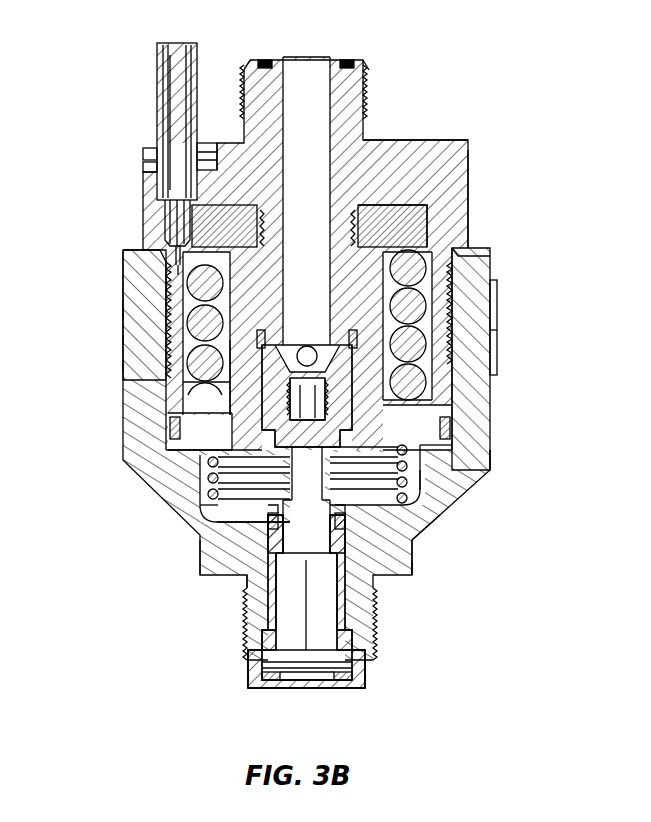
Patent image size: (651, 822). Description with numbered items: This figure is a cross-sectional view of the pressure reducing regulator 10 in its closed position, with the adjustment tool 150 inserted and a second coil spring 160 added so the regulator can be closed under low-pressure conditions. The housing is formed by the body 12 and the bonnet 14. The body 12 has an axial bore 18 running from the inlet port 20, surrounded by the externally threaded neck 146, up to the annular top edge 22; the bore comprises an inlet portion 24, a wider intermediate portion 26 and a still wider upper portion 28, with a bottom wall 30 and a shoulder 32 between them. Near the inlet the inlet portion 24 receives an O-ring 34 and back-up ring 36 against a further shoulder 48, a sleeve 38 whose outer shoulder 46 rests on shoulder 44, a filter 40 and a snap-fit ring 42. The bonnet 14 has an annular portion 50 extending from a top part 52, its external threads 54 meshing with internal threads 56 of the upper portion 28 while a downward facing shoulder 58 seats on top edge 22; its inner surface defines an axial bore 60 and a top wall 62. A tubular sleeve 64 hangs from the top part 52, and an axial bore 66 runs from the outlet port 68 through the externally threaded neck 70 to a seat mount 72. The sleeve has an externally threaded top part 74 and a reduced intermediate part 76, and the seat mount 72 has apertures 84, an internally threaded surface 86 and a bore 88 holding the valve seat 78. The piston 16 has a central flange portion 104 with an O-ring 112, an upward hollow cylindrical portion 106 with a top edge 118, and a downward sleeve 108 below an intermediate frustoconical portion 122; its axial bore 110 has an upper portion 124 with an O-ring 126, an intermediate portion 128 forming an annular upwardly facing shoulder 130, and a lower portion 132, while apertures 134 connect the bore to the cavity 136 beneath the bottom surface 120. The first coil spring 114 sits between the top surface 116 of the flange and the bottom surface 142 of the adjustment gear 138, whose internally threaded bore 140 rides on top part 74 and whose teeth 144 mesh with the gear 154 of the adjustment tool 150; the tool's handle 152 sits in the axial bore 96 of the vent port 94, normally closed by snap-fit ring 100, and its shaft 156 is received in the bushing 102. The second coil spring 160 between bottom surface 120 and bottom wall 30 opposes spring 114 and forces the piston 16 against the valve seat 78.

The pressure reducing regulator 10 is at (535, 95).
The body 12 is at (205, 575).
The bonnet 14 is at (465, 155).
The piston 16 is at (170, 428).
The axial bore 18 is at (215, 400).
The inlet port 20 is at (350, 688).
The annular top edge 22 is at (470, 252).
The inlet portion 24 is at (215, 560).
The intermediate portion 26 is at (213, 480).
The upper portion 28 is at (190, 418).
The bottom wall 30 is at (420, 540).
The shoulder 32 is at (480, 475).
The O-ring 34 is at (400, 580).
The back-up ring 36 is at (412, 560).
The sleeve 38 is at (347, 595).
The filter 40 is at (275, 682).
The snap-fit ring 42 is at (320, 682).
The shoulder 44 is at (345, 630).
The outer shoulder 46 is at (255, 665).
The further shoulder 48 is at (255, 565).
The annular portion 50 is at (140, 305).
The top part 52 is at (395, 145).
The external threads 54 is at (455, 310).
The internal threads 56 is at (460, 290).
The downward facing shoulder 58 is at (455, 260).
The axial bore 60 is at (165, 298).
The top wall 62 is at (400, 200).
The tubular sleeve 64 is at (385, 247).
The axial bore 66 is at (286, 70).
The outlet port 68 is at (318, 57).
The externally threaded neck 70 is at (368, 76).
The seat mount 72 is at (185, 395).
The top part 74 is at (168, 210).
The intermediate part 76 is at (185, 335).
The valve seat 78 is at (425, 445).
The apertures 84 is at (180, 360).
The internally threaded surface 86 is at (307, 396).
The bore 88 is at (307, 339).
The vent port 94 is at (205, 143).
The axial bore 96 is at (150, 168).
The snap-fit ring 100 is at (150, 150).
The bushing 102 is at (160, 250).
The central flange portion 104 is at (450, 427).
The hollow cylindrical portion 106 is at (430, 375).
The sleeve 108 is at (243, 630).
The axial bore 110 is at (155, 368).
The O-ring 112 is at (170, 445).
The first coil spring 114 is at (493, 330).
The top surface 116 is at (445, 400).
The top edge 118 is at (162, 275).
The bottom surface 120 is at (425, 470).
The intermediate frustoconical portion 122 is at (420, 520).
The upper portion 124 is at (200, 385).
The O-ring 126 is at (150, 340).
The intermediate portion 128 is at (235, 520).
The annular upwardly facing shoulder 130 is at (200, 505).
The lower portion 132 is at (300, 620).
The apertures 134 is at (195, 480).
The cavity 136 is at (215, 512).
The adjustment gear 138 is at (425, 200).
The internally threaded bore 140 is at (232, 200).
The bottom surface 142 is at (140, 258).
The teeth 144 is at (470, 180).
The externally threaded neck 146 is at (366, 660).
The adjustment tool 150 is at (176, 42).
The handle 152 is at (160, 85).
The gear 154 is at (176, 240).
The shaft 156 is at (185, 255).
The second coil spring 160 is at (405, 490).